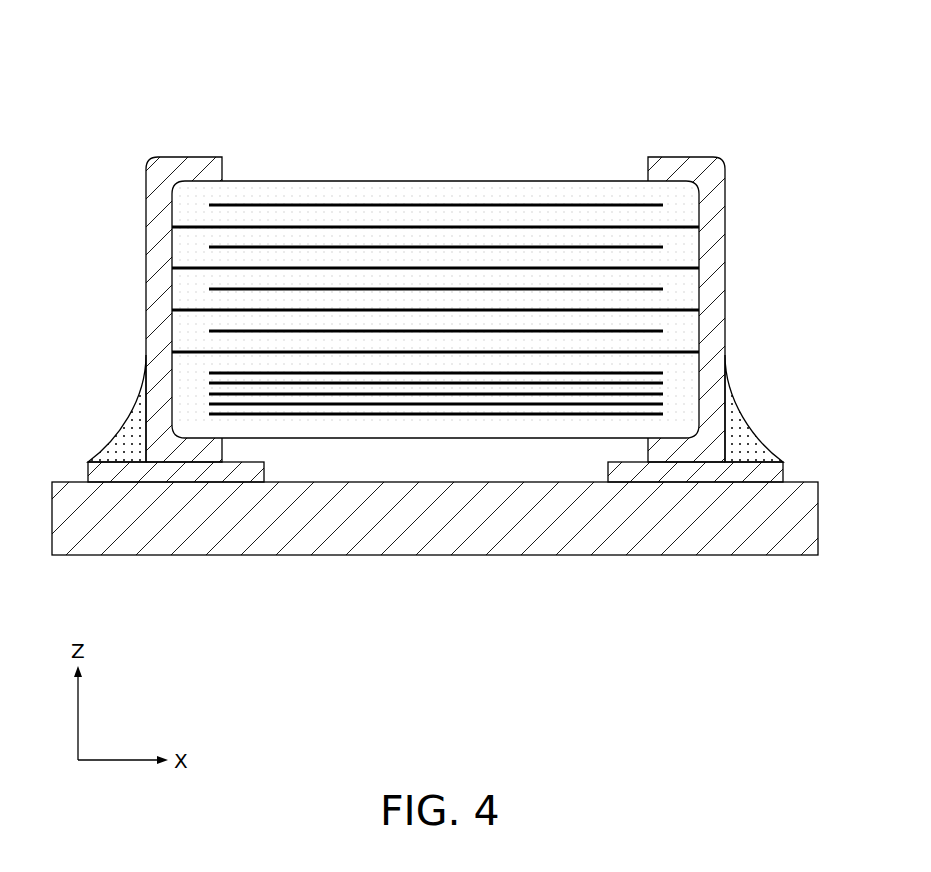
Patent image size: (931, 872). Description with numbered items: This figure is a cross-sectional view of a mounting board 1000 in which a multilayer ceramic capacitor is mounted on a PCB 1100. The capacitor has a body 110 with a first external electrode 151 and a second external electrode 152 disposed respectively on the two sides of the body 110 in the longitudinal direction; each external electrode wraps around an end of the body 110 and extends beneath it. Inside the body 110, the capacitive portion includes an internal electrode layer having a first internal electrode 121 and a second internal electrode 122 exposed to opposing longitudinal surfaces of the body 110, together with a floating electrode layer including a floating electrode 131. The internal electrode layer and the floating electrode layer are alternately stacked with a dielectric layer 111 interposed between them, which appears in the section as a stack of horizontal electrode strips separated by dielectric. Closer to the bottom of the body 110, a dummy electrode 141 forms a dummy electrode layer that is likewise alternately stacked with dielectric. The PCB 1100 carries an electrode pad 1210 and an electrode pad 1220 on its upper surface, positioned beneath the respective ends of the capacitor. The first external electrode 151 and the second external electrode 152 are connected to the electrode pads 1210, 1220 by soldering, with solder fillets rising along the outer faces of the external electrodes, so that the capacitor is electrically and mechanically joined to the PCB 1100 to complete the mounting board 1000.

The mounting board 1000 is at (276, 32).
The body 110 is at (516, 181).
The dielectric layer 111 is at (663, 213).
The first internal electrode 121 is at (390, 228).
The second internal electrode 122 is at (683, 227).
The floating electrode 131 is at (663, 205).
The dummy electrode 141 is at (663, 373).
The first external electrode 151 is at (210, 445).
The second external electrode 152 is at (660, 447).
The PCB 1100 is at (437, 512).
The electrode pad 1210 is at (131, 462).
The electrode pad 1220 is at (739, 462).